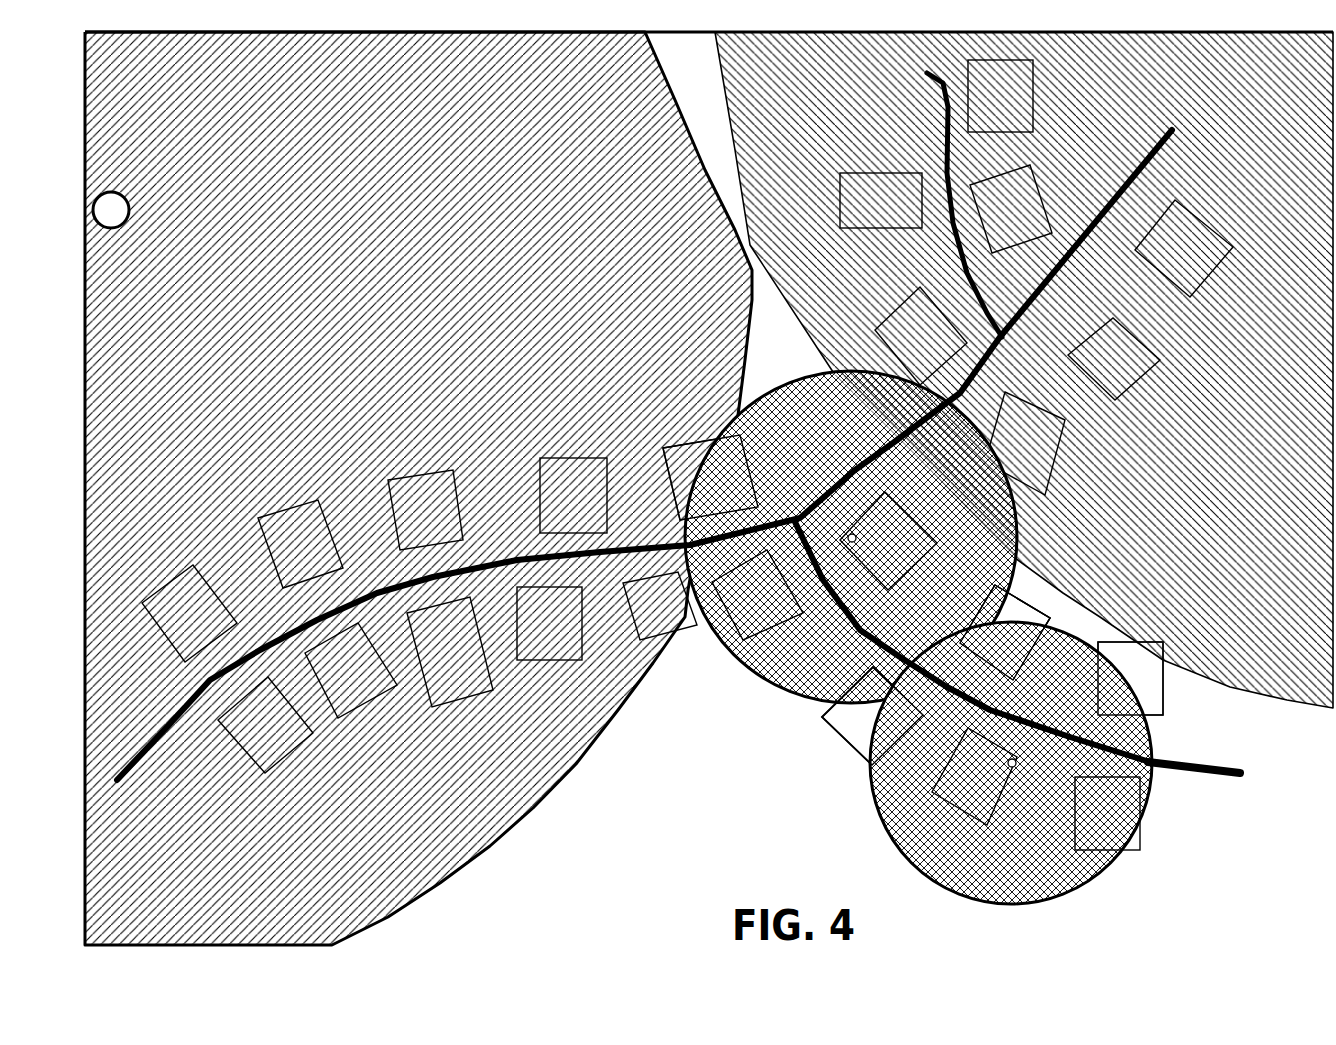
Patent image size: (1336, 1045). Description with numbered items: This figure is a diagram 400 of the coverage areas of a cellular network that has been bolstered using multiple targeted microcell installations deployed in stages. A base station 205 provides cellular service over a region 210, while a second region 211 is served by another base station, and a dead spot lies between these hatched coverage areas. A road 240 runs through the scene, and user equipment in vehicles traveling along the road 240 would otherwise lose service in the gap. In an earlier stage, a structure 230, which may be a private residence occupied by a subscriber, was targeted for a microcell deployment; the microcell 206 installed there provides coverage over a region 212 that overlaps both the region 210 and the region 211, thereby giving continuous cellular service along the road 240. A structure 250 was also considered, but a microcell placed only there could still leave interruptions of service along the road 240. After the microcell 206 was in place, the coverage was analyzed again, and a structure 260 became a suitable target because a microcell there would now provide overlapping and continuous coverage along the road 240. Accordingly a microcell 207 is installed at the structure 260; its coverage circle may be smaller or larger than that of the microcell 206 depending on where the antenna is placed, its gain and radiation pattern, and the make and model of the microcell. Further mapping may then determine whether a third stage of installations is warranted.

The base station 205 is at (125, 222).
The microcell 206 is at (856, 536).
The microcell 207 is at (1016, 760).
The region 210 is at (530, 810).
The region 211 is at (1272, 700).
The region 212 is at (745, 675).
The structure 230 is at (912, 556).
The road 240 is at (804, 510).
The structure 250 is at (893, 726).
The structure 260 is at (1000, 784).
The diagram 400 is at (710, 489).